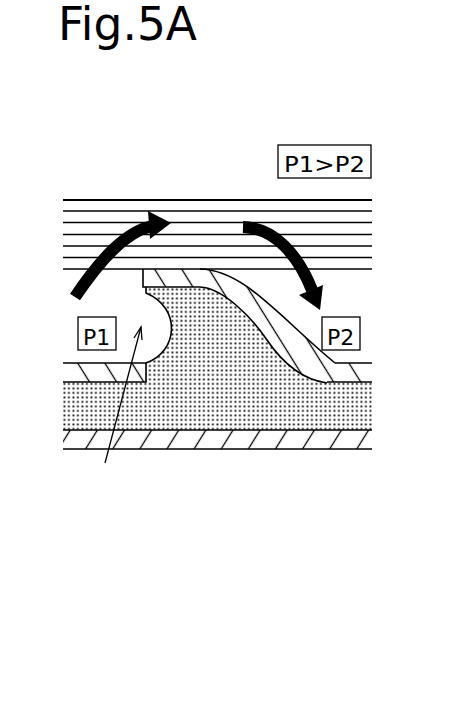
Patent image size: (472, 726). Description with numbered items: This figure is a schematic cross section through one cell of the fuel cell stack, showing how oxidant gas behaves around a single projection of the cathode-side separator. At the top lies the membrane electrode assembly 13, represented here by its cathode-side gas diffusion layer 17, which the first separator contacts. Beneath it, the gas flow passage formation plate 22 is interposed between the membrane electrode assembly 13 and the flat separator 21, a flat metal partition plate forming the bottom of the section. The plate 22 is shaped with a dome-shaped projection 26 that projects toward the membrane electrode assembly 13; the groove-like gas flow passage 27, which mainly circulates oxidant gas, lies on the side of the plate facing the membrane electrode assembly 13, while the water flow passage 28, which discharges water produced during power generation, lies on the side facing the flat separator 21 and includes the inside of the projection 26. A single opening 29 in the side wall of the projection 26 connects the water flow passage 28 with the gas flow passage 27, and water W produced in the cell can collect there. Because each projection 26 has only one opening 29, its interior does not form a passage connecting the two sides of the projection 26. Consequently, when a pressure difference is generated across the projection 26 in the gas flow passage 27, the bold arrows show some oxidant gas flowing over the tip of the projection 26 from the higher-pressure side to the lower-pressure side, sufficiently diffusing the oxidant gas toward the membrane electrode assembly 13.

The membrane electrode assembly 13 is at (217, 198).
The gas diffusion layer 17 is at (98, 198).
The flat separator 21 is at (307, 450).
The gas flow passage formation plate 22 is at (77, 359).
The projection 26 is at (193, 268).
The gas flow passage 27 is at (73, 310).
The water flow passage 28 is at (360, 409).
The opening 29 is at (116, 412).
The water W is at (211, 410).